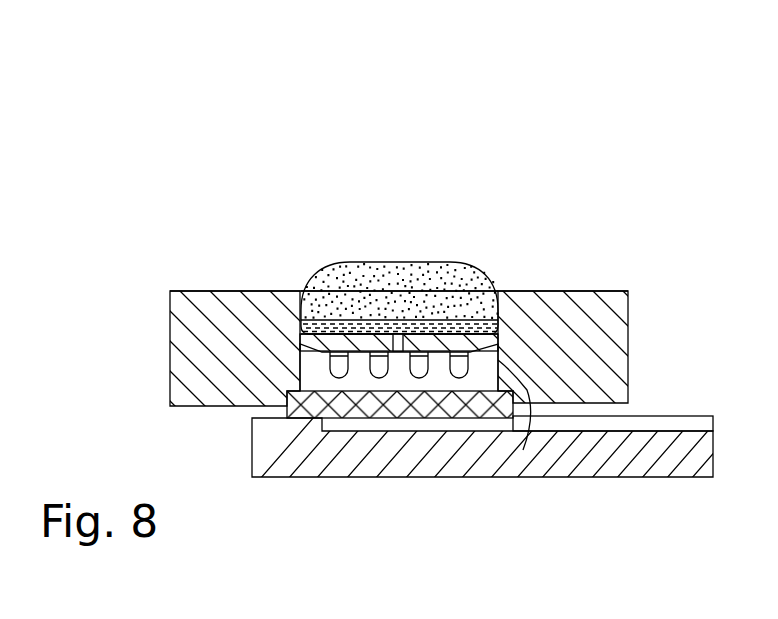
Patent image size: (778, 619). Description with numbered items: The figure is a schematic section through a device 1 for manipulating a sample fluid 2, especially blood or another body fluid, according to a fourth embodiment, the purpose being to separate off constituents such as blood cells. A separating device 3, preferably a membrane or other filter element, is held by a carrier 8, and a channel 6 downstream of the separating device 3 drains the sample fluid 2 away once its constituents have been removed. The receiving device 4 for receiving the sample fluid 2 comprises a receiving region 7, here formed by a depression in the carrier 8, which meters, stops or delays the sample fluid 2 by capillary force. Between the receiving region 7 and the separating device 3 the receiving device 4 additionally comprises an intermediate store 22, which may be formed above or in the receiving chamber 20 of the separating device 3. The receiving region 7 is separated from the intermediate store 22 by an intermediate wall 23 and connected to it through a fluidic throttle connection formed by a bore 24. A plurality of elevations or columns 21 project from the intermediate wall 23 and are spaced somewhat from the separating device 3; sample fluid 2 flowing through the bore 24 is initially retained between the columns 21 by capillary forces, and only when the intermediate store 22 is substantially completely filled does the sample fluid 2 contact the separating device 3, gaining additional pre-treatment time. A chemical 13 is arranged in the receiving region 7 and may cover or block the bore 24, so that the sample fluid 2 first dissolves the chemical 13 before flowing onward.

The device 1 is at (148, 168).
The sample fluid 2 is at (336, 266).
The separating device 3 is at (440, 410).
The receiving device 4 is at (292, 278).
The channel 6 is at (675, 418).
The receiving region 7 is at (498, 310).
The carrier 8 is at (590, 307).
The chemical 13 is at (422, 327).
The receiving chamber 20 is at (523, 450).
The columns 21 is at (379, 370).
The intermediate store 22 is at (307, 363).
The intermediate wall 23 is at (375, 340).
The bore 24 is at (401, 340).